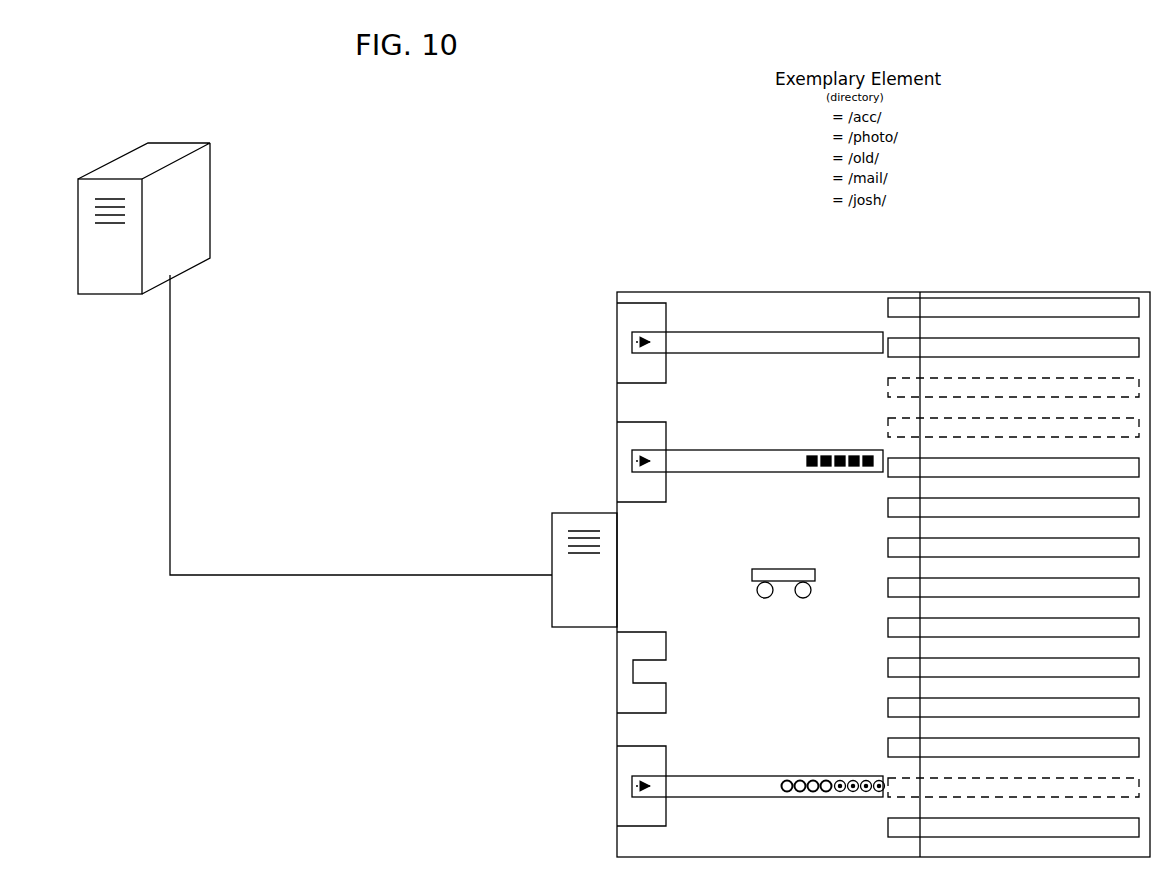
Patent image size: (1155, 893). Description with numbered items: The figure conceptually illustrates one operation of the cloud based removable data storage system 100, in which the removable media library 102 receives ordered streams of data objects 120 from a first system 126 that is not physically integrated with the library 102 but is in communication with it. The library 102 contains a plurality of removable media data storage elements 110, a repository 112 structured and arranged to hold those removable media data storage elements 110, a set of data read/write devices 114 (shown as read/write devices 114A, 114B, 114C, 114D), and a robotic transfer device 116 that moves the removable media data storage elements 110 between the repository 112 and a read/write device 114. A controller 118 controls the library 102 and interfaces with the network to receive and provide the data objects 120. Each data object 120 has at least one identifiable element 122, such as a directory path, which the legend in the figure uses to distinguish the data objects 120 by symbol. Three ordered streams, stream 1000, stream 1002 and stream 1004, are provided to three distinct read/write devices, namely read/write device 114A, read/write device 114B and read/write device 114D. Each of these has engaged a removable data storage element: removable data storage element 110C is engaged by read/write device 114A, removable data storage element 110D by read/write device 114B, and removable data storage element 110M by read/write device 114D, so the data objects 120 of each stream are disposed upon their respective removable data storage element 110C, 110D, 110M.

The cloud based removable data storage system 100 is at (1000, 186).
The removable media library 102 is at (1016, 286).
The removable media data storage elements 110 is at (1082, 302).
The removable data storage element 110C is at (752, 343).
The removable data storage element 110D is at (826, 448).
The removable data storage element 110M is at (790, 773).
The repository 112 is at (1014, 414).
The data read/write device 114 is at (676, 546).
The read/write device 114A is at (661, 373).
The read/write device 114B is at (660, 492).
The read/write device 114C is at (655, 700).
The read/write device 114D is at (650, 816).
The robotic transfer device 116 is at (803, 597).
The controller 118 is at (552, 610).
The data objects 120 is at (783, 212).
The identifiable element 122 is at (851, 212).
The first system 126 is at (128, 282).
The stream 1000 is at (611, 350).
The stream 1002 is at (611, 490).
The stream 1004 is at (611, 811).